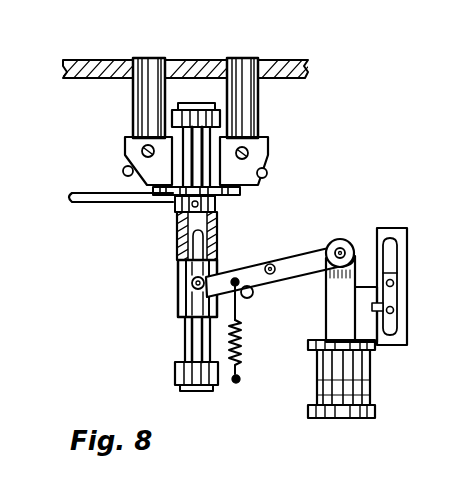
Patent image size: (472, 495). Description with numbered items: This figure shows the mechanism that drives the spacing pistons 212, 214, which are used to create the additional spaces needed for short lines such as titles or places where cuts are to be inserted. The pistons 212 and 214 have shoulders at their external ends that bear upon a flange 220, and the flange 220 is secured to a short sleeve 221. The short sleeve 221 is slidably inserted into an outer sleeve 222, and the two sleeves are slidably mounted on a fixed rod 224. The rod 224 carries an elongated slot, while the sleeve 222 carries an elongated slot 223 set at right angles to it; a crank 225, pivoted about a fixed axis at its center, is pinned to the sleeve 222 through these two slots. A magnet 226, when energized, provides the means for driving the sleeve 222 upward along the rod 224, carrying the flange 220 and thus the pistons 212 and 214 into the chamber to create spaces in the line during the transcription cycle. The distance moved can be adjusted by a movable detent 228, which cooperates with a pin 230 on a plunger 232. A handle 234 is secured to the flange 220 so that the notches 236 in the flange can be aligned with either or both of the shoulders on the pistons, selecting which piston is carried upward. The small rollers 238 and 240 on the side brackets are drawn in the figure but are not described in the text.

The spacing piston 212 is at (161, 60).
The spacing piston 214 is at (250, 62).
The flange 220 is at (244, 193).
The short sleeve 221 is at (218, 205).
The outer sleeve 222 is at (177, 245).
The elongated slot 223 is at (178, 293).
The fixed rod 224 is at (185, 338).
The crank 225 is at (286, 256).
The magnet 226 is at (318, 384).
The movable detent 228 is at (382, 306).
The pin 230 is at (366, 285).
The plunger 232 is at (333, 326).
The handle 234 is at (92, 202).
The notches 236 is at (171, 200).
The bracket roller 238 is at (123, 171).
The bracket roller 240 is at (268, 173).